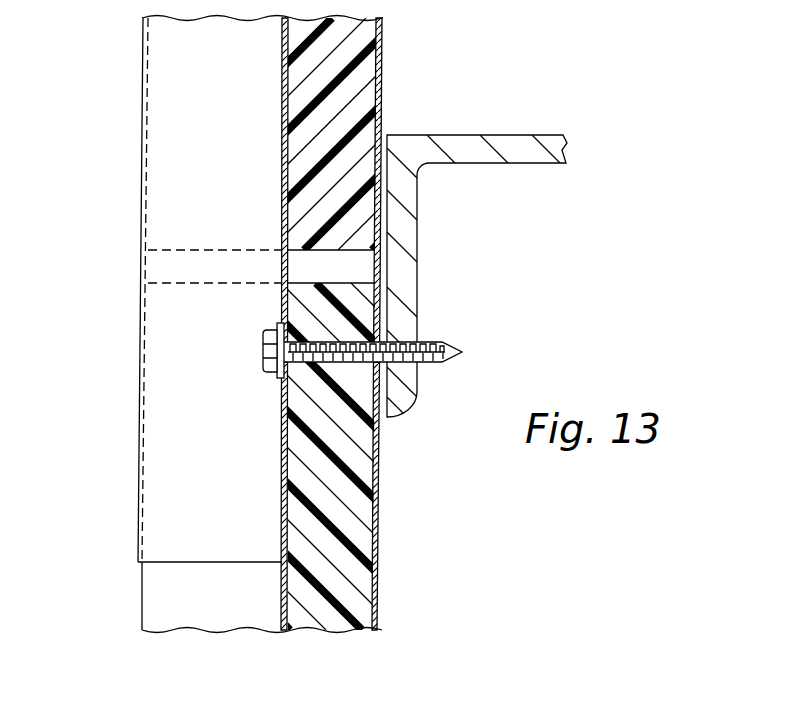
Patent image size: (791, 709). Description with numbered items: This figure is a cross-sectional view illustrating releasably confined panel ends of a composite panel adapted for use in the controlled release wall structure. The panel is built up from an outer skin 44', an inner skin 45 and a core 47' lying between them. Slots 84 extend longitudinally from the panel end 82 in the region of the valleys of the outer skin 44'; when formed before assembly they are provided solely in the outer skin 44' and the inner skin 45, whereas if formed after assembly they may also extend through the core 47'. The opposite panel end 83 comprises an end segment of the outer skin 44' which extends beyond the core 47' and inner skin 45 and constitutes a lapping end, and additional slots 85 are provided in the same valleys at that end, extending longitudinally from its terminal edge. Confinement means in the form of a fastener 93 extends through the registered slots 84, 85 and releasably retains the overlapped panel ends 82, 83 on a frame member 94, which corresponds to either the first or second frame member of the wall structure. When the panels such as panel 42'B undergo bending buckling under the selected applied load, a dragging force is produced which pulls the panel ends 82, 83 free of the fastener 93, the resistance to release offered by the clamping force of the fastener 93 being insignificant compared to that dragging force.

The core 47' is at (319, 324).
The inner skin 45 is at (378, 81).
The frame member 94 is at (508, 146).
The panel 42'B is at (272, 324).
The outer skin 44' is at (180, 319).
The slots 84 is at (283, 300).
The fastener 93 is at (438, 343).
The panel end 82 is at (377, 447).
The opposite panel end 83 is at (160, 468).
The additional slots 85 is at (287, 489).